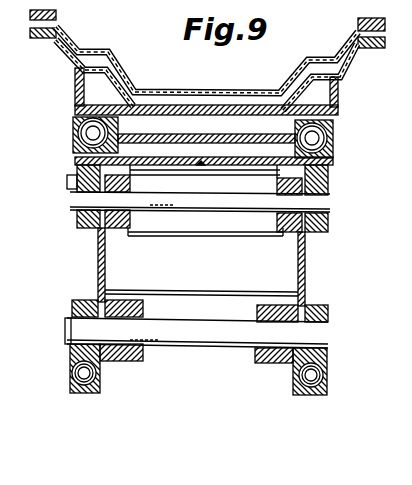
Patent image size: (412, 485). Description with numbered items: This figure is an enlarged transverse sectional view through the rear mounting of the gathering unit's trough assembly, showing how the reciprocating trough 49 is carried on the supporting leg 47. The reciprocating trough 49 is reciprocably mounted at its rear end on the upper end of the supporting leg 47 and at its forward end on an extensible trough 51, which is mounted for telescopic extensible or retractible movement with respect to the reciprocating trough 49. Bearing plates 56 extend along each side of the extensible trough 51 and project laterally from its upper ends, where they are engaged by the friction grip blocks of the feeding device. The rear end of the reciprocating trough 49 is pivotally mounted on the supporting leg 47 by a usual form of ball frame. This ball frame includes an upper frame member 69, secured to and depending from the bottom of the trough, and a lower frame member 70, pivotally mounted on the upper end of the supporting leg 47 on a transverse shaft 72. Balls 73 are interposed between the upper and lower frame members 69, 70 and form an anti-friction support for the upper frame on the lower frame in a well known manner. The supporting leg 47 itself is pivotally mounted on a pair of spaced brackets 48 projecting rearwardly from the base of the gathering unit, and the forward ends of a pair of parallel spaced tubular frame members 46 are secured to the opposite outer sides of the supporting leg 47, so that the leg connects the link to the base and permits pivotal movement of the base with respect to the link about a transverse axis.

The tubular frame member 46 is at (70, 373).
The supporting leg 47 is at (96, 260).
The bracket 48 is at (133, 362).
The reciprocating trough 49 is at (70, 59).
The extensible trough 51 is at (124, 61).
The bearing plate 56 is at (57, 14).
The upper frame member 69 is at (75, 100).
The lower frame member 70 is at (74, 152).
The transverse shaft 72 is at (172, 196).
The ball 73 is at (76, 125).